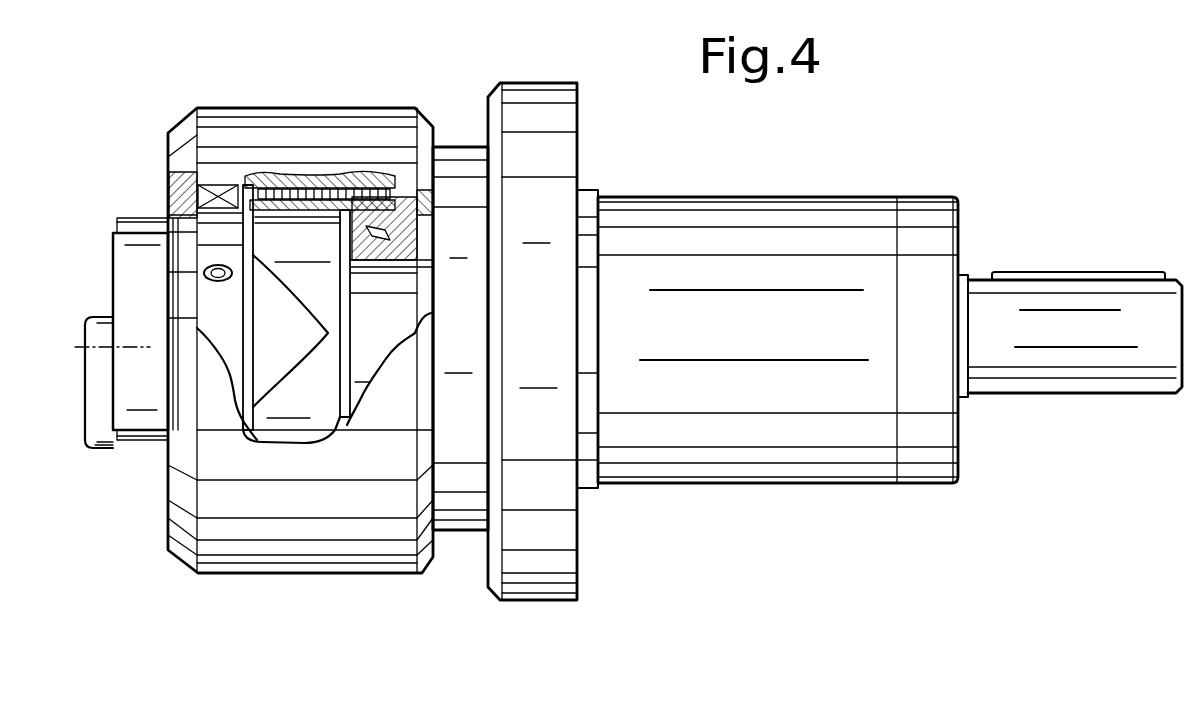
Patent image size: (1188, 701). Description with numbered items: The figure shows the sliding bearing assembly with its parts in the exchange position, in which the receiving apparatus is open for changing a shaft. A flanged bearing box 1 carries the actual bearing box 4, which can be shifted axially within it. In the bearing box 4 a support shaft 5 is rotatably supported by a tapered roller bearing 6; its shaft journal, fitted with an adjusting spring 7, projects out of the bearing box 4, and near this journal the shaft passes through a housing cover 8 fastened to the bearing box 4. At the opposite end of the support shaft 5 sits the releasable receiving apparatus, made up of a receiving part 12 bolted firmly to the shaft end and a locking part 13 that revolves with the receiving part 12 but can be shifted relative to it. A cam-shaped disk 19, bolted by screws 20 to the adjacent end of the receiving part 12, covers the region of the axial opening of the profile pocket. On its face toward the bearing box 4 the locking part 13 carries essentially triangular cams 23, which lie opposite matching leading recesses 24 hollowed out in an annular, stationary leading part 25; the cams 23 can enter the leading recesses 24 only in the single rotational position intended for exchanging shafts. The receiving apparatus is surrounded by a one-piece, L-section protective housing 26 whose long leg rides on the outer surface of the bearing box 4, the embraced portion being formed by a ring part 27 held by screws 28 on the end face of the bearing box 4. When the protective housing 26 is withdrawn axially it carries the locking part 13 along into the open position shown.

The flanged bearing box 1 is at (637, 195).
The bearing box 4 is at (463, 145).
The support shaft 5 is at (1063, 365).
The tapered roller bearing 6 is at (397, 210).
The adjusting spring 7 is at (1068, 272).
The housing cover 8 is at (952, 195).
The receiving part 12 is at (143, 415).
The locking part 13 is at (225, 340).
The cam-shaped disk 19 is at (105, 434).
The screws 20 is at (76, 350).
The cams 23 is at (267, 338).
The leading recesses 24 is at (280, 284).
The leading part 25 is at (303, 418).
The protective housing 26 is at (365, 528).
The ring part 27 is at (292, 187).
The screws 28 is at (338, 187).